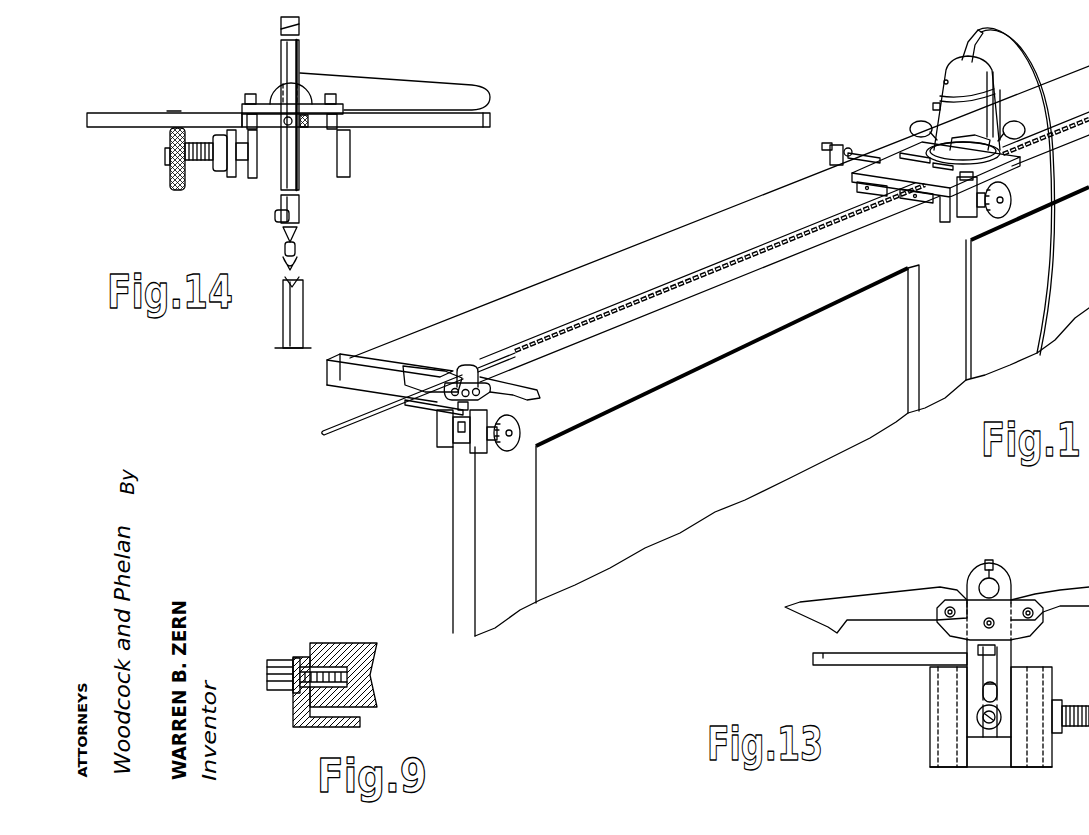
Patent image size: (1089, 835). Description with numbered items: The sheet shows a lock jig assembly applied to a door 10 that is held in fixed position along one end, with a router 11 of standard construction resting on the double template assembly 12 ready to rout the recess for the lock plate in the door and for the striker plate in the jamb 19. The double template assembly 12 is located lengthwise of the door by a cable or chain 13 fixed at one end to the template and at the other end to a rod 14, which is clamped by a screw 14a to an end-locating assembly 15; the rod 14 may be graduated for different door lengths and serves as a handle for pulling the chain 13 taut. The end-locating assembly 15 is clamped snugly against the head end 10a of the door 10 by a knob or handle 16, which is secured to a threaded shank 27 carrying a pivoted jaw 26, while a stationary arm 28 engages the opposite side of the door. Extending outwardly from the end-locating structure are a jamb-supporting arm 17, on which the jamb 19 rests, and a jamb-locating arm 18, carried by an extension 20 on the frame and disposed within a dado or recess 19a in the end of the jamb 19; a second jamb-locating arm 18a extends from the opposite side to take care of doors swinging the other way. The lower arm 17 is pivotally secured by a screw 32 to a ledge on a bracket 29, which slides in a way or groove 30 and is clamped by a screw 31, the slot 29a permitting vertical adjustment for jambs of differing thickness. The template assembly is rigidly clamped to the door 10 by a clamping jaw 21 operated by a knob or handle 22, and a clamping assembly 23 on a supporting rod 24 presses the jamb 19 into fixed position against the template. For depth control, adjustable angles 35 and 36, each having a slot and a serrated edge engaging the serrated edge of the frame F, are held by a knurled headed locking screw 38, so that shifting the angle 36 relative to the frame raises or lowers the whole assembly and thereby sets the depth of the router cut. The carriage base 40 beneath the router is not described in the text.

In FIG. 1, the door 10 is at (729, 518).
In FIG. 1, the head end of the door 10a is at (453, 563).
In FIG. 1, the router 11 is at (947, 98).
In FIG. 1, the double template assembly 12 is at (891, 248).
In FIG. 1, the cable or chain 13 is at (697, 285).
In FIG. 14, the rod 14 is at (302, 180).
In FIG. 1, the rod 14 is at (358, 428).
In FIG. 13, the rod 14 is at (998, 584).
In FIG. 14, the screw 14a is at (285, 120).
In FIG. 13, the screw 14a is at (991, 560).
In FIG. 14, the end-locating assembly 15 is at (236, 78).
In FIG. 1, the end-locating assembly 15 is at (434, 448).
In FIG. 13, the end-locating assembly 15 is at (867, 694).
In FIG. 14, the knob or handle 16 is at (170, 176).
In FIG. 1, the knob or handle 16 is at (513, 450).
In FIG. 14, the jamb-supporting arm 17 is at (410, 84).
In FIG. 1, the jamb-supporting arm 17 is at (417, 411).
In FIG. 13, the jamb-supporting arm 17 is at (823, 662).
In FIG. 14, the jamb-locating arm 18 is at (493, 125).
In FIG. 1, the jamb-locating arm 18 is at (422, 376).
In FIG. 13, the jamb-locating arm 18 is at (890, 597).
In FIG. 14, the second jamb-locating arm 18a is at (107, 117).
In FIG. 1, the second jamb-locating arm 18a is at (533, 390).
In FIG. 1, the jamb 19 is at (573, 275).
In FIG. 1, the dado or recess 19a is at (343, 357).
In FIG. 14, the extension 20 is at (303, 130).
In FIG. 1, the extension 20 is at (462, 369).
In FIG. 13, the extension 20 is at (973, 572).
In FIG. 1, the clamping jaw 21 is at (943, 208).
In FIG. 1, the knob or handle 22 is at (1002, 214).
In FIG. 1, the clamping assembly 23 is at (823, 165).
In FIG. 1, the supporting rod 24 is at (870, 152).
In FIG. 14, the jaw 26 is at (253, 179).
In FIG. 13, the jaw 26 is at (1027, 768).
In FIG. 14, the threaded shank 27 is at (206, 165).
In FIG. 13, the threaded shank 27 is at (1070, 735).
In FIG. 14, the stationary arm 28 is at (350, 160).
In FIG. 13, the stationary arm 28 is at (937, 716).
In FIG. 14, the bracket 29 is at (283, 76).
In FIG. 13, the bracket 29 is at (980, 684).
In FIG. 13, the slot 29a is at (993, 690).
In FIG. 13, the way or groove 30 is at (992, 765).
In FIG. 13, the screw 31 is at (977, 726).
In FIG. 13, the screw 32 is at (978, 649).
In FIG. 1, the adjustable angle 35 is at (923, 199).
In FIG. 9, the adjustable angle 36 is at (293, 722).
In FIG. 9, the knurled headed locking screw 38 is at (280, 658).
In FIG. 1, the carriage base plate 40 is at (866, 181).
In FIG. 9, the frame F is at (330, 643).